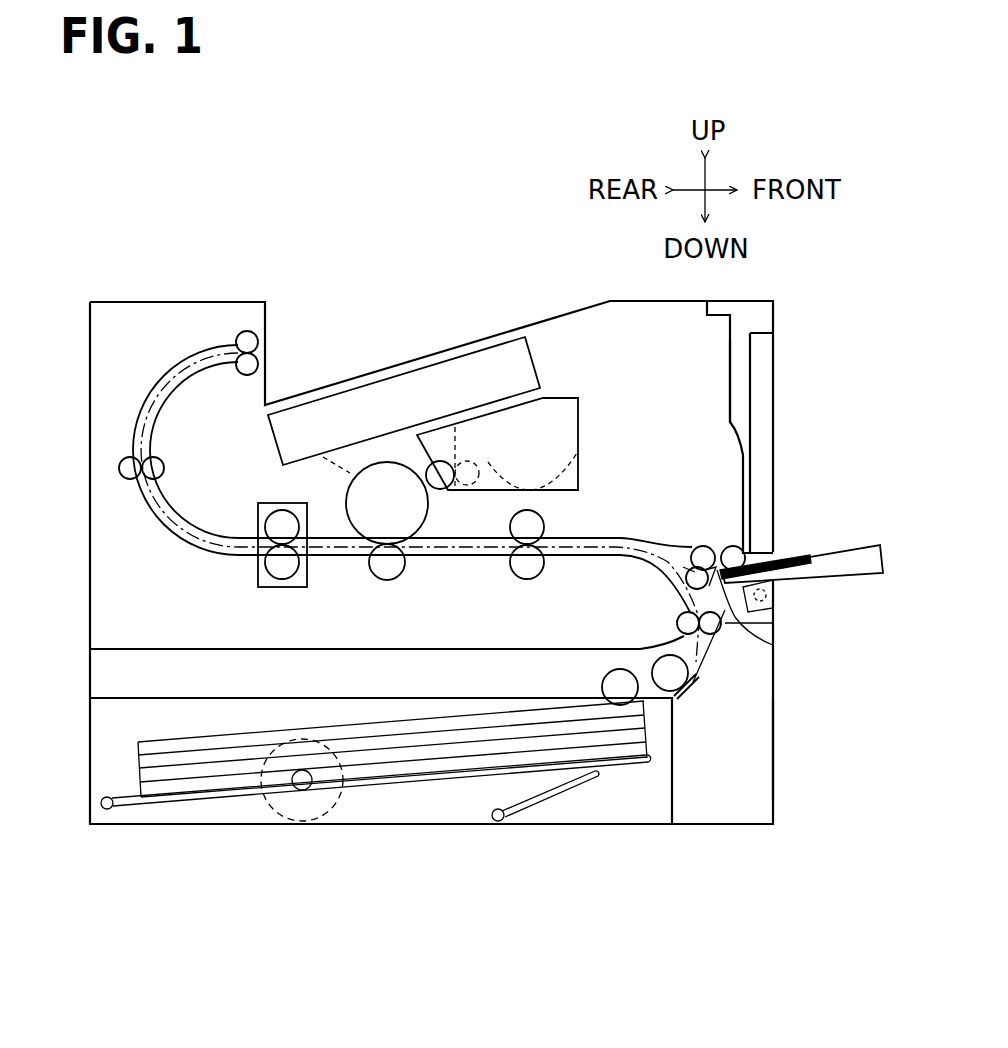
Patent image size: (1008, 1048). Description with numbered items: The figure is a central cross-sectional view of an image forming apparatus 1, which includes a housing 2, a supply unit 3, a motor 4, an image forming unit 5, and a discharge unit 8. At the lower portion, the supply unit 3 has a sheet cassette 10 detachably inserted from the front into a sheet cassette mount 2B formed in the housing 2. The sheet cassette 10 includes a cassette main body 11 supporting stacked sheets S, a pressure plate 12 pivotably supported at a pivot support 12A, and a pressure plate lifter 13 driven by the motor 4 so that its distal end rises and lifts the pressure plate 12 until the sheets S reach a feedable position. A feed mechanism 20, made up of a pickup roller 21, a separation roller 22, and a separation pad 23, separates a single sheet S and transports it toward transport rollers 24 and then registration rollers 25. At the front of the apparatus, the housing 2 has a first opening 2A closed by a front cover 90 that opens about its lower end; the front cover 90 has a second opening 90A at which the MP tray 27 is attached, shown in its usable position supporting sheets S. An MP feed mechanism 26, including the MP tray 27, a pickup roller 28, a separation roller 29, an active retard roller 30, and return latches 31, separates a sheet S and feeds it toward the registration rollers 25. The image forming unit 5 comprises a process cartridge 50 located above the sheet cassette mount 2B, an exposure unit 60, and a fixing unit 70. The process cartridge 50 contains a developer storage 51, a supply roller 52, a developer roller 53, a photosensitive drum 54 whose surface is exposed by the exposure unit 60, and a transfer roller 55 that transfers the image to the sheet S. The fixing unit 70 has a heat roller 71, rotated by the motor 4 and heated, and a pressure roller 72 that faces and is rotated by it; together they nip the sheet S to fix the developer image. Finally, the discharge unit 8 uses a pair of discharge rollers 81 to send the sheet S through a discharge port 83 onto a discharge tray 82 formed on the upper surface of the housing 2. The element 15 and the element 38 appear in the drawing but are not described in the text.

The image forming apparatus 1 is at (117, 256).
The housing 2 is at (90, 525).
The first opening 2A is at (735, 387).
The sheet cassette mount 2B is at (226, 686).
The supply unit 3 is at (333, 693).
The motor 4 is at (266, 820).
The image forming unit 5 is at (338, 580).
The discharge unit 8 is at (343, 301).
The sheet cassette 10 is at (88, 743).
The cassette main body 11 is at (138, 697).
The pressure plate 12 is at (165, 806).
The pivot support 12A is at (107, 810).
The pressure plate lifter 13 is at (535, 810).
The rear wall 15 is at (773, 745).
The feed mechanism 20 is at (704, 676).
The pickup roller 21 is at (615, 686).
The separation roller 22 is at (654, 668).
The separation pad 23 is at (694, 685).
The transport rollers 24 is at (677, 621).
The registration rollers 25 is at (539, 521).
The MP feed mechanism 26 is at (703, 534).
The MP tray 27 is at (857, 579).
The pickup roller 28 is at (733, 545).
The separation roller 29 is at (703, 545).
The active retard roller 30 is at (685, 578).
The return latches 31 is at (731, 586).
The sensor 38 is at (775, 581).
The process cartridge 50 is at (583, 428).
The developer storage 51 is at (519, 452).
The supply roller 52 is at (468, 497).
The developer roller 53 is at (426, 462).
The photosensitive drum 54 is at (420, 509).
The transfer roller 55 is at (405, 566).
The exposure unit 60 is at (384, 414).
The fixing unit 70 is at (247, 525).
The heat roller 71 is at (273, 513).
The pressure roller 72 is at (268, 565).
The discharge rollers 81 is at (251, 345).
The discharge tray 82 is at (380, 381).
The discharge port 83 is at (254, 362).
The front cover 90 is at (768, 317).
The second opening 90A is at (778, 557).
The sheet S is at (200, 742).